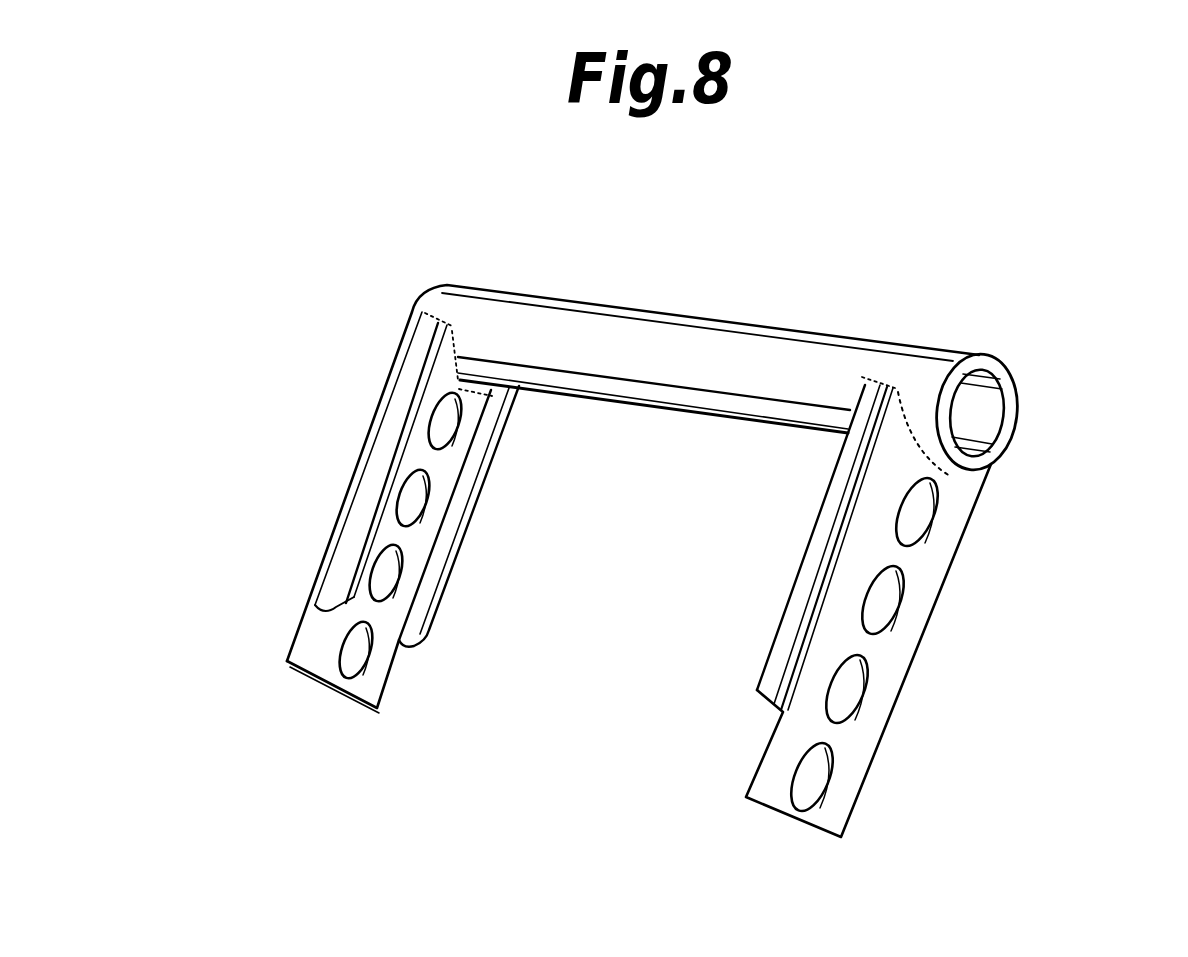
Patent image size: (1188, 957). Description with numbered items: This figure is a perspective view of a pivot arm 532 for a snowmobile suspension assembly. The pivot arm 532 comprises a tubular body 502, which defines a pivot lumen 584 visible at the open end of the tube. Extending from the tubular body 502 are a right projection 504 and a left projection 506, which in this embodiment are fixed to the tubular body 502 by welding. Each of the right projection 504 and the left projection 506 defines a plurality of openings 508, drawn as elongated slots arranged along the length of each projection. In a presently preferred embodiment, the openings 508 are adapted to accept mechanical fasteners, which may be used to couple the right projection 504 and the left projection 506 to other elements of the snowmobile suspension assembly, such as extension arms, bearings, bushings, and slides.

The tubular body 502 is at (746, 350).
The right projection 504 is at (356, 452).
The left projection 506 is at (875, 753).
The openings 508 is at (344, 667).
The pivot lumen 584 is at (988, 412).
The pivot arm 532 is at (927, 848).